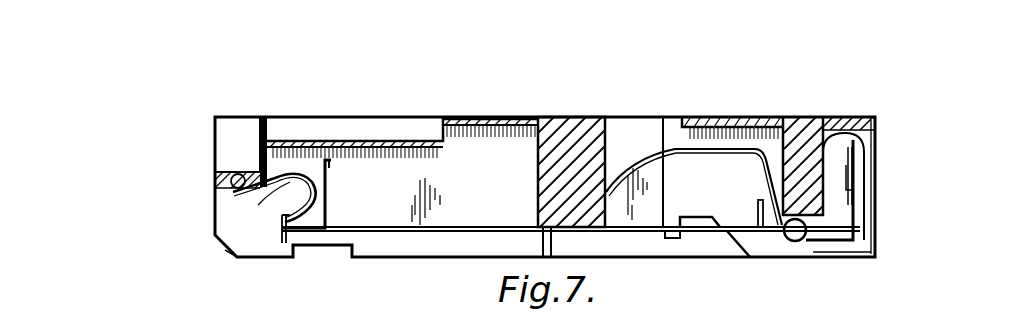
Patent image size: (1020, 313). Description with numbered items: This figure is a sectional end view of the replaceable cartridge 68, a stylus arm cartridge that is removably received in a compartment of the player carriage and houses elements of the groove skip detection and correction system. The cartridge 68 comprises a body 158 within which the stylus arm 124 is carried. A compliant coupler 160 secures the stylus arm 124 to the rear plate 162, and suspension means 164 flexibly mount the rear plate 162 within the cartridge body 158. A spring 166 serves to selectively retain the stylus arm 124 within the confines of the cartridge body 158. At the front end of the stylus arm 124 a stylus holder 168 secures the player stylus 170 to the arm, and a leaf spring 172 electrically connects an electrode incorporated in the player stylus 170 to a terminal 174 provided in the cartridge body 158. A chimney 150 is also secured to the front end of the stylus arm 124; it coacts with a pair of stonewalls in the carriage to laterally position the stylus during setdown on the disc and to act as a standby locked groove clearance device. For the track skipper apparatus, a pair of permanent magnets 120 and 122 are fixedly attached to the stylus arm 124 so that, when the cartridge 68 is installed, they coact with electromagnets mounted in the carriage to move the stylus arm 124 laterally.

The replaceable cartridge 68 is at (457, 97).
The permanent magnet 120 is at (337, 171).
The permanent magnet 122 is at (757, 212).
The stylus arm 124 is at (465, 227).
The chimney 150 is at (328, 201).
The body 158 is at (576, 117).
The compliant coupler 160 is at (823, 242).
The rear plate 162 is at (860, 221).
The suspension means 164 is at (812, 135).
The spring 166 is at (632, 172).
The stylus holder 168 is at (313, 232).
The player stylus 170 is at (283, 243).
The leaf spring 172 is at (290, 190).
The terminal 174 is at (232, 196).